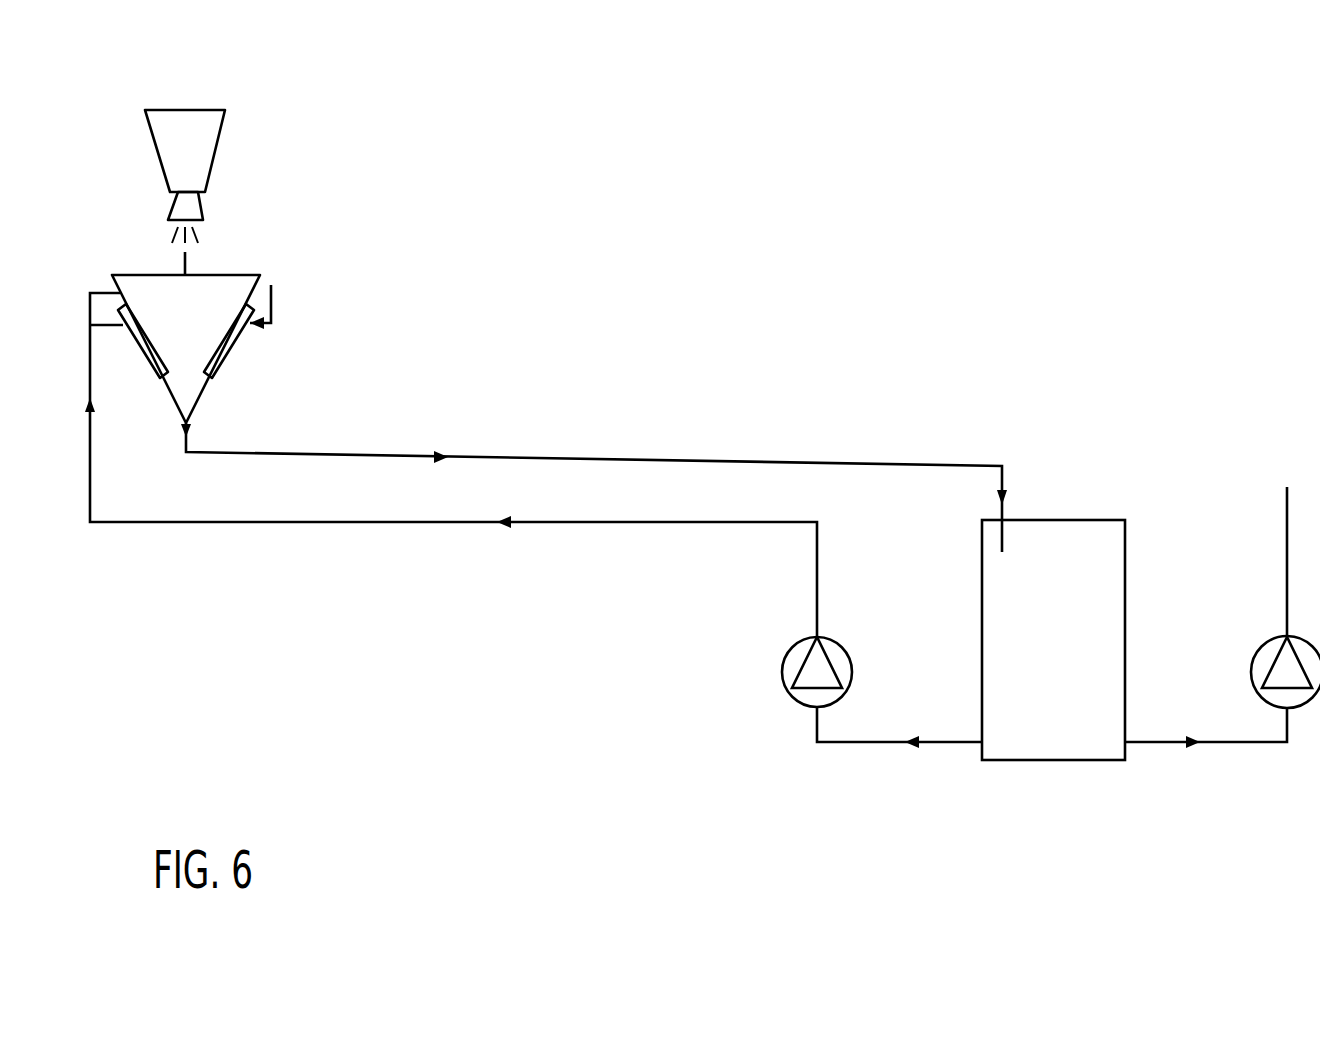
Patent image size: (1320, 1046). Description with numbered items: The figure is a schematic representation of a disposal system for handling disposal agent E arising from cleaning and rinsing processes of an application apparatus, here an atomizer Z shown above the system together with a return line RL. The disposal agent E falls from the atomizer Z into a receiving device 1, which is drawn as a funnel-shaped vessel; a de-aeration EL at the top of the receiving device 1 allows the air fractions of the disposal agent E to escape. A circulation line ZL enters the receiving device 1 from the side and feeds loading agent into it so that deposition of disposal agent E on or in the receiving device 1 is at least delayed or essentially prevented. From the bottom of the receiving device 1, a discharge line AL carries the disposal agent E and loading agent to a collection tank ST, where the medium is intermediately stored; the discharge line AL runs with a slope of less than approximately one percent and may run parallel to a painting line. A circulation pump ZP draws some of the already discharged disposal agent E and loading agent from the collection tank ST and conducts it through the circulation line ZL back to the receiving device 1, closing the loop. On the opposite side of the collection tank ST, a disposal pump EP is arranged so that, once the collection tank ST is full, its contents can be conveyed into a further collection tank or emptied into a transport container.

The atomizer Z is at (220, 147).
The disposal agent E is at (168, 233).
The de-aeration EL is at (193, 257).
The receiving device 1 is at (273, 237).
The return line RL is at (280, 303).
The discharge line AL is at (620, 448).
The collection tank ST is at (1040, 517).
The disposal pump EP is at (1265, 630).
The circulation line ZL is at (265, 530).
The circulation pump ZP is at (783, 703).